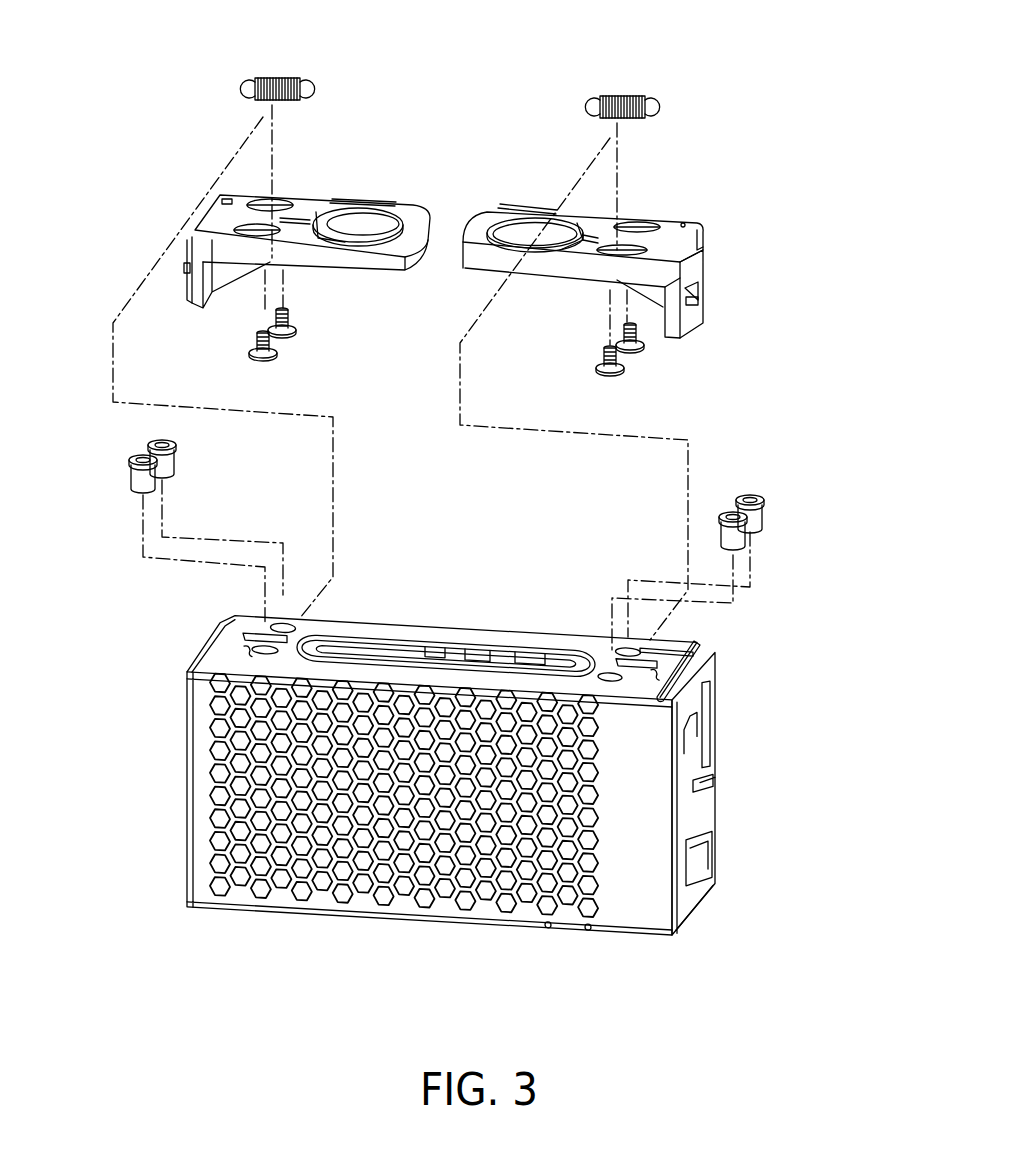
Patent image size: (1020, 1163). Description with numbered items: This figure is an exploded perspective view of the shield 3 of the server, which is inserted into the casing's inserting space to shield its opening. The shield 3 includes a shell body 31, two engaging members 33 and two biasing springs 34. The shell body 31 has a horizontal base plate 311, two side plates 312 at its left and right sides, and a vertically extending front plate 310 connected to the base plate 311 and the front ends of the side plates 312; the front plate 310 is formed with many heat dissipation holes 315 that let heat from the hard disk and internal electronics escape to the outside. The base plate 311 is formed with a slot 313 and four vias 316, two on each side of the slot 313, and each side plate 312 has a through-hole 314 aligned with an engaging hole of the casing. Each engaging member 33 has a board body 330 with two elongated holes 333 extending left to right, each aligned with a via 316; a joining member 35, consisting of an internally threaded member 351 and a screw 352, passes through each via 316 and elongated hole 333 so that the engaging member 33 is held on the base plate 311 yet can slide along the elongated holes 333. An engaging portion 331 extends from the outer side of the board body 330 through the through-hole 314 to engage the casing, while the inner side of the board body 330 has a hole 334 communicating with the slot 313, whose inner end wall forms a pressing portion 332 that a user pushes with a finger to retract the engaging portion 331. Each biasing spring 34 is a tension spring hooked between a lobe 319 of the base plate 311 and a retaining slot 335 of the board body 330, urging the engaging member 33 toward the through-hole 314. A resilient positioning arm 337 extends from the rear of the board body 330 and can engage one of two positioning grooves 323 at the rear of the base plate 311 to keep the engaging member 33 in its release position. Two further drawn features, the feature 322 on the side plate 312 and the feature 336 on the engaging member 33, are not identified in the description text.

The shield 3 is at (750, 915).
The shell body 31 is at (700, 930).
The front plate 310 is at (429, 803).
The base plate 311 is at (442, 657).
The side plates 312 is at (630, 790).
The slot 313 is at (446, 655).
The through-hole 314 is at (690, 733).
The heat dissipation holes 315 is at (568, 926).
The vias 316 is at (450, 652).
The lobe 319 is at (468, 653).
The slot 322 is at (699, 859).
The positioning grooves 323 is at (485, 656).
The engaging members 33 is at (234, 188).
The board body 330 is at (487, 263).
The engaging portion 331 is at (184, 268).
The pressing portion 332 is at (414, 220).
The elongated holes 333 is at (258, 226).
The hole 334 is at (371, 215).
The retaining slot 335 is at (592, 234).
The notch 336 is at (190, 248).
The resilient positioning arm 337 is at (398, 205).
The biasing springs 34 is at (277, 80).
The joining members 35 is at (137, 446).
The internally threaded member 351 is at (152, 470).
The screw 352 is at (275, 352).